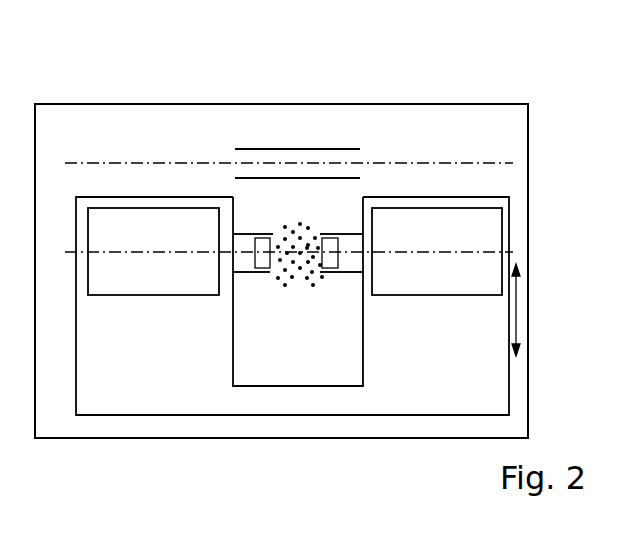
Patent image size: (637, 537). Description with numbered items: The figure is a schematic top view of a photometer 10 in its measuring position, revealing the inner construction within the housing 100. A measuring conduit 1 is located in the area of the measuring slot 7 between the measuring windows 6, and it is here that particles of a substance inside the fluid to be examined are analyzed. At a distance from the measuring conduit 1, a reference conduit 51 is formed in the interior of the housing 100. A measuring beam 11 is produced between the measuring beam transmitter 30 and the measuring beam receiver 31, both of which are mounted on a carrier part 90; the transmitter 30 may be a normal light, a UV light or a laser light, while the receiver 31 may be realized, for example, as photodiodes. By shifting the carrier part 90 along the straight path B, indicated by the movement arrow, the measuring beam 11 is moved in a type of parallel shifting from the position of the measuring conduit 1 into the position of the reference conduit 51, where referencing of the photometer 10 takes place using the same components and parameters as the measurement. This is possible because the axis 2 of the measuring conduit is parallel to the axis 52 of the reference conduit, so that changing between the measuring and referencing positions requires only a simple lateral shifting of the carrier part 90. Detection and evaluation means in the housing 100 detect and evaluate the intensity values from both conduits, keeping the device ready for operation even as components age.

The photometer 10 is at (372, 104).
The housing 100 is at (78, 133).
The axis of the reference conduit 52 is at (104, 161).
The reference conduit 51 is at (291, 148).
The carrier part 90 is at (111, 411).
The measuring beam 11 is at (348, 232).
The measuring beam transmitter 30 is at (121, 235).
The measuring beam receiver 31 is at (497, 234).
The axis of the measuring conduit 2 is at (66, 252).
The measuring windows 6 is at (331, 306).
The measuring conduit 1 is at (352, 306).
The measuring slot 7 is at (300, 285).
The path B is at (516, 313).